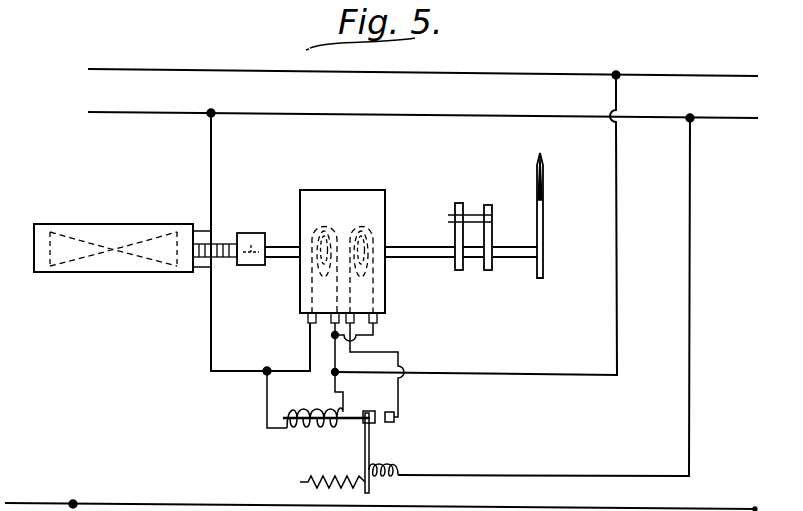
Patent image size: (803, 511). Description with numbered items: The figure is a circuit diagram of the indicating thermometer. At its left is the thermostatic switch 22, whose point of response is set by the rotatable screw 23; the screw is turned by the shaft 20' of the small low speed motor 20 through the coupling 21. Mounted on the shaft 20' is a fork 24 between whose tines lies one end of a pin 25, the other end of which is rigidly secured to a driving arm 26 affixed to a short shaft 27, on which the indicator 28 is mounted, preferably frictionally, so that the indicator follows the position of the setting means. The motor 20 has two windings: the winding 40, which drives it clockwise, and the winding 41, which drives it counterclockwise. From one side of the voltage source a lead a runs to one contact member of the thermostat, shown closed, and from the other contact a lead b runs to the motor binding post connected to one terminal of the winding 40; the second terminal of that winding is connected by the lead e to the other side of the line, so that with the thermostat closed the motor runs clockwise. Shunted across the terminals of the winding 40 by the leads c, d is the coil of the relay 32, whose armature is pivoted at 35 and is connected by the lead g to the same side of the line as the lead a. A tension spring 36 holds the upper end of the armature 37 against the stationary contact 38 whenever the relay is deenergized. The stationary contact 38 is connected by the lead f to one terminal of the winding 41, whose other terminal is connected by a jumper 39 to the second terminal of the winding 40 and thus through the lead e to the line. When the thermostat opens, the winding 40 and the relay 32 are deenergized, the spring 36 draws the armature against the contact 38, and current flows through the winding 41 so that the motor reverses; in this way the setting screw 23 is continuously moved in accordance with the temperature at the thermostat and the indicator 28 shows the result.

The lead a is at (211, 147).
The lead b is at (212, 311).
The lead c is at (267, 397).
The lead d is at (345, 406).
The lead e is at (617, 296).
The lead f is at (399, 353).
The lead g is at (572, 475).
The motor 20 is at (365, 256).
The shaft 20' is at (401, 207).
The coupling 21 is at (248, 233).
The thermostatic switch 22 is at (77, 223).
The screw 23 is at (222, 258).
The fork 24 is at (457, 210).
The pin 25 is at (472, 214).
The driving arm 26 is at (489, 204).
The short shaft 27 is at (515, 256).
The indicator 28 is at (544, 205).
The relay 32 is at (308, 431).
The pivot 35 is at (356, 448).
The tension spring 36 is at (308, 478).
The upper end of the armature 37 is at (372, 412).
The stationary contact 38 is at (390, 424).
The jumper 39 is at (363, 343).
The winding 40 is at (330, 220).
The winding 41 is at (362, 224).